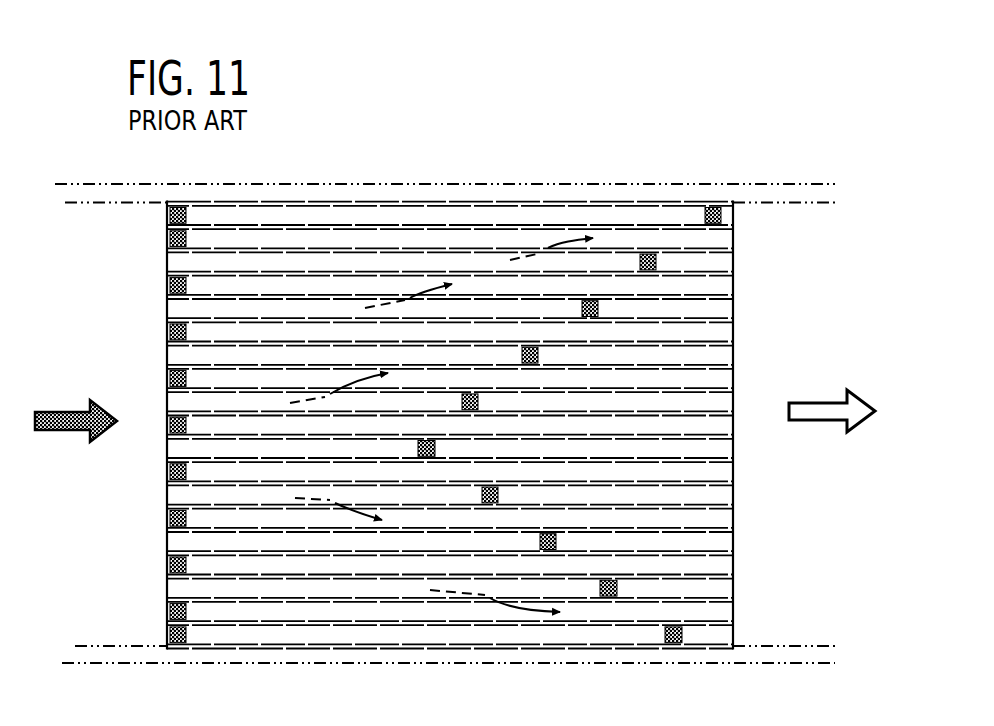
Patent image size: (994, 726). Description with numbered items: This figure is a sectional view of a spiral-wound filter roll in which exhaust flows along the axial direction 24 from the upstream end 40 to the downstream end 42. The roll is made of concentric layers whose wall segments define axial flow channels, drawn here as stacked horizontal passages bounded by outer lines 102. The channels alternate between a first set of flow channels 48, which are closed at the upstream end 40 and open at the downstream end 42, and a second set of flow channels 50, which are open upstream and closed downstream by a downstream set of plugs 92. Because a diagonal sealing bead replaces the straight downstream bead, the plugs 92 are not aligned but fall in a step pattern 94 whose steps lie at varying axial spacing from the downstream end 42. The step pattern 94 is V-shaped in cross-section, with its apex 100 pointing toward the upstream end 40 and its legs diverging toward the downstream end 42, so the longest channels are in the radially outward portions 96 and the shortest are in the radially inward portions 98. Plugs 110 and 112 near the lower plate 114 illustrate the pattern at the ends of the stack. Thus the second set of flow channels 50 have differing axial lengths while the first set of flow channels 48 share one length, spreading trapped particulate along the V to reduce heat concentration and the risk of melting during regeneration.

The axial direction 24 is at (53, 432).
The upstream end 40 is at (167, 460).
The downstream end 42 is at (735, 358).
The first set of flow channels 48 is at (205, 523).
The second set of flow channels 50 is at (333, 587).
The downstream set of plugs 92 is at (540, 352).
The step pattern 94 is at (524, 333).
The radially outward portions 96 is at (138, 258).
The radially inward portions 98 is at (144, 392).
The apex 100 is at (167, 448).
The housing wall 102 is at (748, 183).
The bottom spacer bar 110 is at (187, 633).
The bottom right spacer bar 112 is at (662, 628).
The bottom plate 114 is at (372, 637).